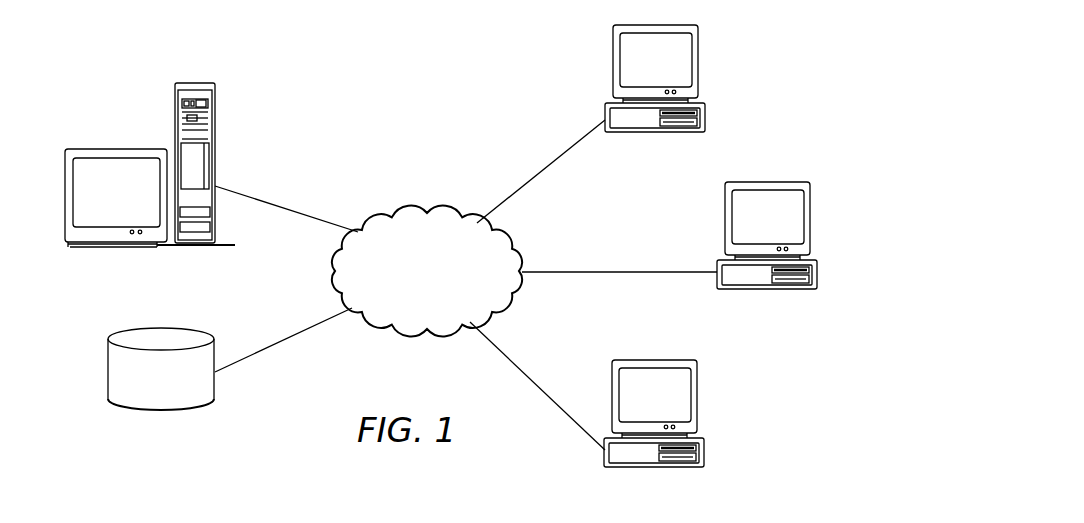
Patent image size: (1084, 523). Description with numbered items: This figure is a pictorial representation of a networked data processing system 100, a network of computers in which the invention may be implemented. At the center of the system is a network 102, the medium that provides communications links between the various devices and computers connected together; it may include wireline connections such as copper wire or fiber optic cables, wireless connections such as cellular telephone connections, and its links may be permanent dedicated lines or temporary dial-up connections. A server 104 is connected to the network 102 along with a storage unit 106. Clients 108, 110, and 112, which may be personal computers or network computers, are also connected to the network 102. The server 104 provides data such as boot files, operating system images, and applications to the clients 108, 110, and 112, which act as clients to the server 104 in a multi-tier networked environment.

The networked data processing system 100 is at (307, 70).
The network 102 is at (447, 287).
The server 104 is at (173, 107).
The storage unit 106 is at (108, 368).
The client 108 is at (698, 72).
The client 110 is at (808, 222).
The client 112 is at (695, 400).